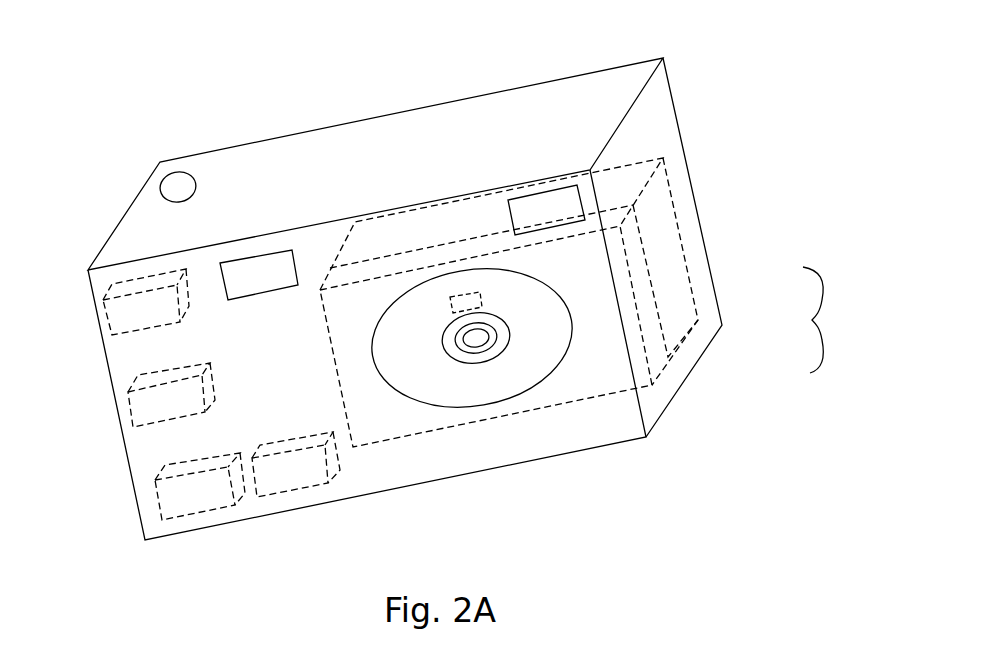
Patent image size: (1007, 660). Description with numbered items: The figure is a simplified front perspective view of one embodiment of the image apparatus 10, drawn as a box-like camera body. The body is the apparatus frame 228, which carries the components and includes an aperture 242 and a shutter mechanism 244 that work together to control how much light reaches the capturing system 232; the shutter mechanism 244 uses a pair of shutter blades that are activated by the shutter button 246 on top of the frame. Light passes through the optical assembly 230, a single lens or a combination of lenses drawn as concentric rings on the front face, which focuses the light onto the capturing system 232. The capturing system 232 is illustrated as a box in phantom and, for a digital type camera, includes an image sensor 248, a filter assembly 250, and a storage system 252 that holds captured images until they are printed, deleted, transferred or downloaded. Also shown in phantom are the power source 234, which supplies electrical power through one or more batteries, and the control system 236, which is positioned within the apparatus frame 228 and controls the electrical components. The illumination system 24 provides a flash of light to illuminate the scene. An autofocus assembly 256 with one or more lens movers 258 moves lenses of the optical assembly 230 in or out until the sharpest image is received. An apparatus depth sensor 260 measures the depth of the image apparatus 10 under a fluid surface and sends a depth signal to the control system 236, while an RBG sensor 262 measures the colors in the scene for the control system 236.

The image apparatus 10 is at (160, 151).
The apparatus frame 228 is at (542, 100).
The shutter button 246 is at (177, 185).
The RBG sensor 262 is at (260, 270).
The illumination system 24 is at (573, 195).
The filter assembly 250 is at (658, 353).
The capturing system 232 is at (761, 289).
The image sensor 248 is at (677, 302).
The lens mover 258 is at (460, 292).
The autofocus assembly 256 is at (574, 316).
The optical assembly 230 is at (503, 343).
The shutter mechanism 244 is at (460, 348).
The aperture 242 is at (477, 341).
The storage system 252 is at (123, 313).
The power source 234 is at (147, 408).
The control system 236 is at (173, 495).
The apparatus depth sensor 260 is at (288, 473).